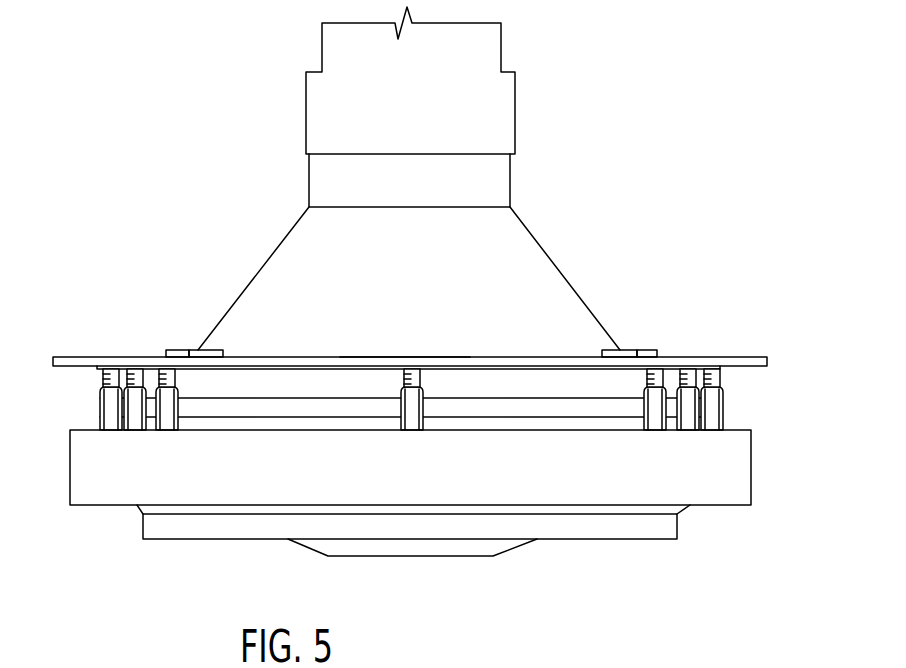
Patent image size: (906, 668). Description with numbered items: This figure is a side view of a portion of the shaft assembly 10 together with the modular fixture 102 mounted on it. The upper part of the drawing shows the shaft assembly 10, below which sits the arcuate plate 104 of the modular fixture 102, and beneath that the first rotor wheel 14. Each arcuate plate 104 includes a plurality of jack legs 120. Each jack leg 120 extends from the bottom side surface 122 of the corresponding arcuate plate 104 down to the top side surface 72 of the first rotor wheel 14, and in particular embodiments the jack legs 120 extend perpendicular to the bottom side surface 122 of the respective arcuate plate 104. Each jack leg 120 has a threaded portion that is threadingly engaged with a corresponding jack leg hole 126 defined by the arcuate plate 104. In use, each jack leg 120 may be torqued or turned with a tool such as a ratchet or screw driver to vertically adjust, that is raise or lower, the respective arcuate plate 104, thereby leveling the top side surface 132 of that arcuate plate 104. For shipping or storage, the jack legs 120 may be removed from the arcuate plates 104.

The shaft assembly 10 is at (548, 95).
The modular fixture 102 is at (130, 307).
The arcuate plate 104 is at (243, 360).
The top side surface 132 is at (380, 357).
The jack leg hole 126 is at (572, 357).
The bottom side surface 122 is at (283, 370).
The jack leg 120 is at (100, 402).
The top side surface 72 is at (250, 430).
The first rotor wheel 14 is at (722, 472).